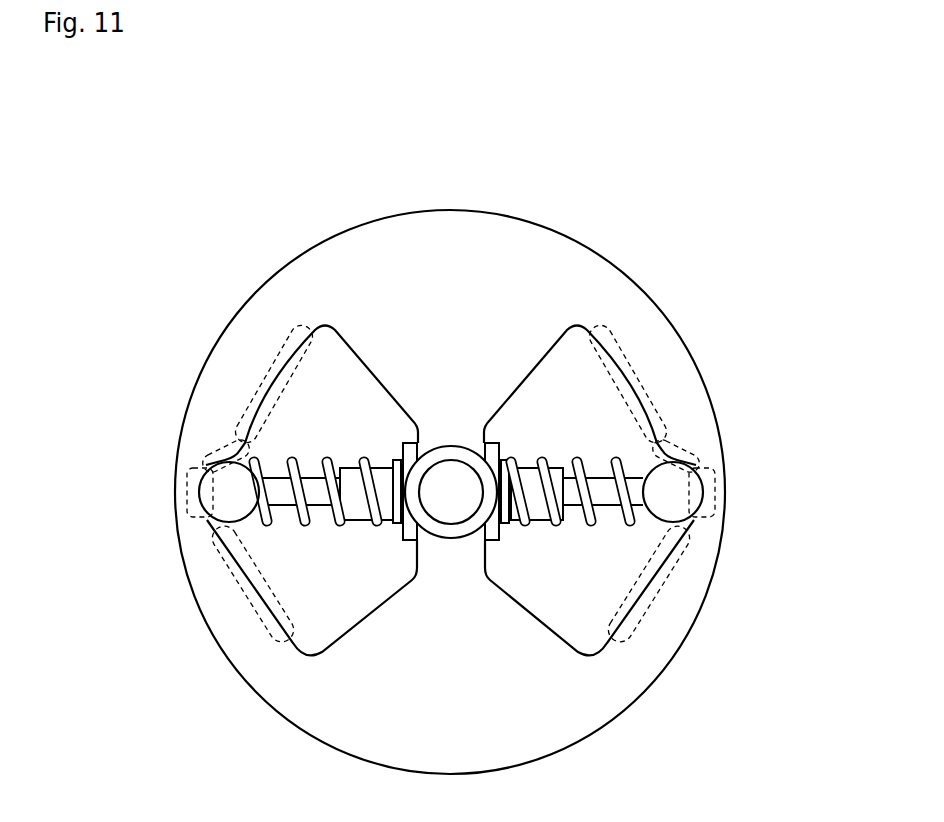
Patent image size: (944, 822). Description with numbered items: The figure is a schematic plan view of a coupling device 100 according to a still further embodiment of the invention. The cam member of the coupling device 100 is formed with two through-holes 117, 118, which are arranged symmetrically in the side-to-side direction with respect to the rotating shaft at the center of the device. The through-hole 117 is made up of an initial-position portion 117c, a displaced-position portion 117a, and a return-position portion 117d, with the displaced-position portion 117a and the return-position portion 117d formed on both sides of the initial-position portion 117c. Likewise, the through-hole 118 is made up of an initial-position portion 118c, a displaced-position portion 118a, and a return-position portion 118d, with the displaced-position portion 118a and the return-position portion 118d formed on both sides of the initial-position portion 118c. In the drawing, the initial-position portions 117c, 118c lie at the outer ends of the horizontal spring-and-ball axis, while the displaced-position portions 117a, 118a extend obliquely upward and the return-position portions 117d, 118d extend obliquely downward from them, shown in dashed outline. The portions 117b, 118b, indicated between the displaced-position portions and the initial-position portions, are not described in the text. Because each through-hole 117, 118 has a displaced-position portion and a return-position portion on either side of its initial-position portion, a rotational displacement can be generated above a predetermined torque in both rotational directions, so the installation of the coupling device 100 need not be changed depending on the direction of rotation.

The coupling device 100 is at (247, 168).
The through-hole 117 is at (517, 388).
The displaced-position portion 117a is at (643, 373).
The hook portion of first wing member 117b is at (694, 438).
The initial-position portion 117c is at (715, 493).
The return-position portion 117d is at (653, 603).
The through-hole 118 is at (362, 605).
The displaced-position portion 118a is at (253, 383).
The hook portion of second wing member 118b is at (222, 448).
The initial-position portion 118c is at (187, 498).
The return-position portion 118d is at (220, 563).